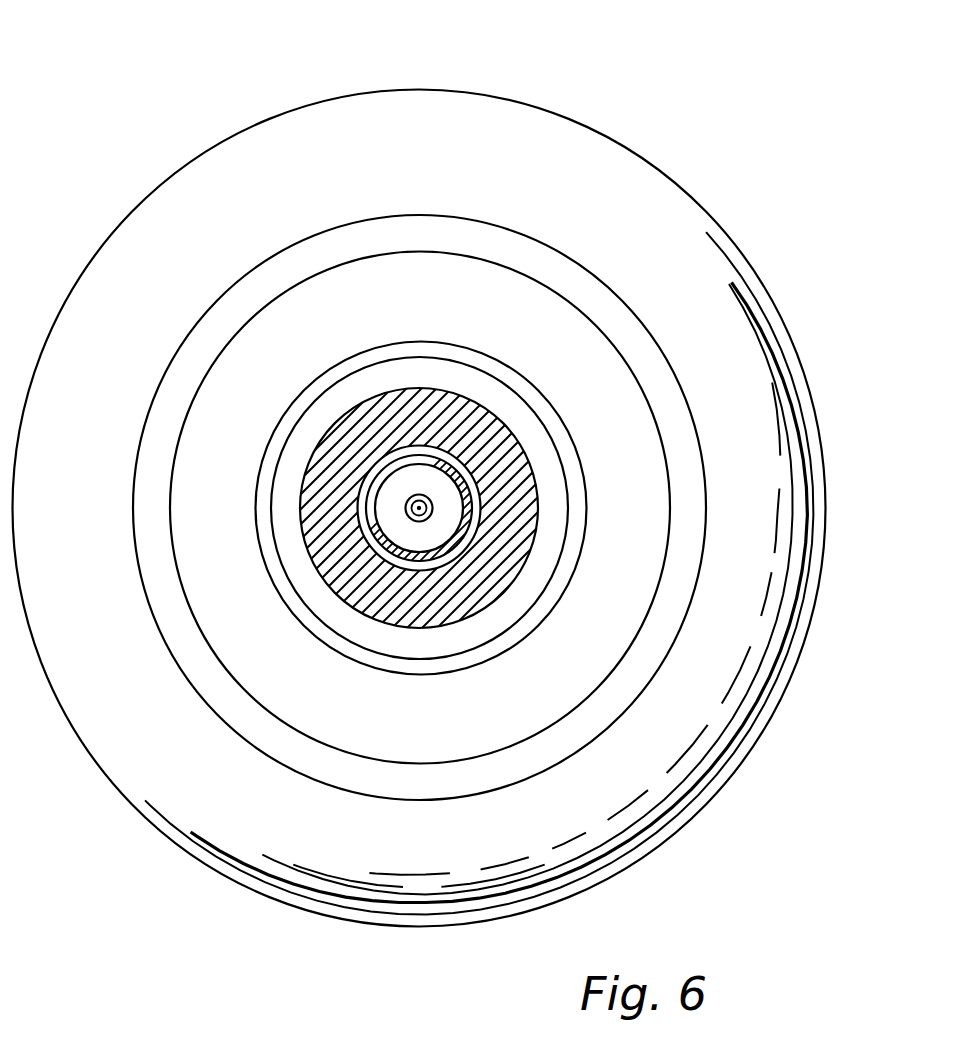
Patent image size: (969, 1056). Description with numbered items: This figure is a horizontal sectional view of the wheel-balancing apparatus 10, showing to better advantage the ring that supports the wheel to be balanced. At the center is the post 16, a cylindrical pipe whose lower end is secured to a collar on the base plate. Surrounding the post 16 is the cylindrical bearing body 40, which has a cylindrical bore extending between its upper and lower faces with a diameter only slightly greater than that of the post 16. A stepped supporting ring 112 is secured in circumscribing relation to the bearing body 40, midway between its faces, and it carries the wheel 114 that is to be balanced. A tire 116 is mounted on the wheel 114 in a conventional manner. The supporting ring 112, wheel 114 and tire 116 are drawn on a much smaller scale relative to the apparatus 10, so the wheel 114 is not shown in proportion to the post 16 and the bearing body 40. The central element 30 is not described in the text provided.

The apparatus 10 is at (615, 85).
The tire 116 is at (667, 177).
The wheel 114 is at (560, 338).
The stepped supporting ring 112 is at (536, 437).
The cylindrical bearing body 40 is at (537, 495).
The post 16 is at (469, 566).
The axle/center shaft 30 is at (435, 507).